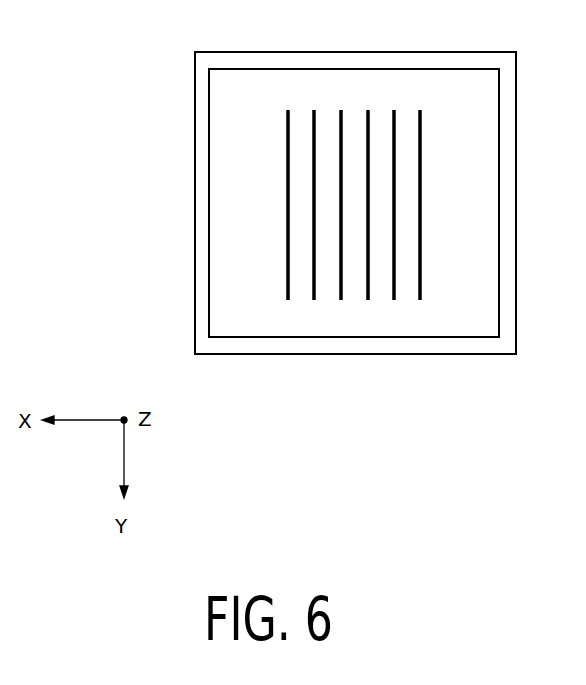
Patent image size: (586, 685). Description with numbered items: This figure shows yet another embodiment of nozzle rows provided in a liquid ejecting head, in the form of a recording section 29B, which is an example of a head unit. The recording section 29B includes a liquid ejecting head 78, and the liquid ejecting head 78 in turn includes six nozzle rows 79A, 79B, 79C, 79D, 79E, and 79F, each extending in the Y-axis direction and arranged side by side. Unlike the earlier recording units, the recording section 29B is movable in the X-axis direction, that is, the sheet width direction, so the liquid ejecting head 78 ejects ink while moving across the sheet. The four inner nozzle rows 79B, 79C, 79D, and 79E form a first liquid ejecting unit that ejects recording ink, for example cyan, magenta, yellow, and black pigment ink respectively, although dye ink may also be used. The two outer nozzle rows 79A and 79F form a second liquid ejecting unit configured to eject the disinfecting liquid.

The recording section 29B is at (195, 128).
The liquid ejecting head 78 is at (209, 207).
The nozzle row 79A is at (288, 122).
The nozzle row 79B is at (314, 288).
The nozzle row 79C is at (341, 122).
The nozzle row 79D is at (368, 122).
The nozzle row 79E is at (394, 288).
The nozzle row 79F is at (420, 122).